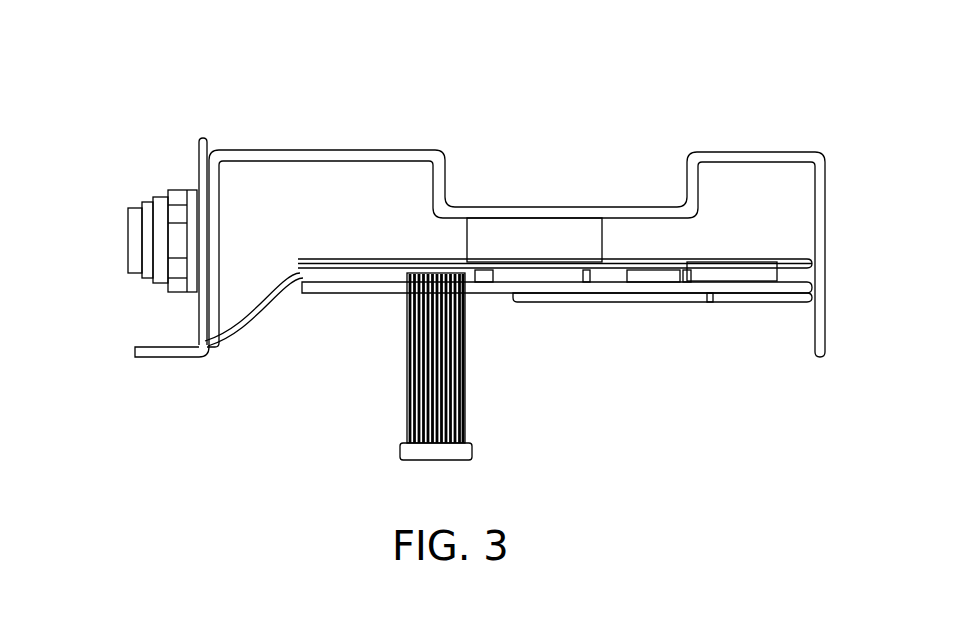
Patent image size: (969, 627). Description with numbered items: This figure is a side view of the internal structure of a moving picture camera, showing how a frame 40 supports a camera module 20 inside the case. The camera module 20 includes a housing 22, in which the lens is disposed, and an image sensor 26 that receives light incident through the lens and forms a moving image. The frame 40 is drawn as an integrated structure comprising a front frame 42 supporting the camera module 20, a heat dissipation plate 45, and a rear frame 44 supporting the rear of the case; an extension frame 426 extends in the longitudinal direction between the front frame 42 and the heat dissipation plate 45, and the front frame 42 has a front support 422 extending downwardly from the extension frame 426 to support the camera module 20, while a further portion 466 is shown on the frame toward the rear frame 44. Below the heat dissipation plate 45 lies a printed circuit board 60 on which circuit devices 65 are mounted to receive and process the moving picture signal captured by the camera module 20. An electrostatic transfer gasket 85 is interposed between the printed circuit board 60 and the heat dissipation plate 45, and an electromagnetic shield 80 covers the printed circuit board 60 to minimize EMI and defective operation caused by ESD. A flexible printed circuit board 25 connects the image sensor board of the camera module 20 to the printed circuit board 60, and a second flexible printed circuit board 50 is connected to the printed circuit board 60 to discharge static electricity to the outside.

The camera module 20 is at (125, 204).
The housing 22 is at (140, 253).
The flexible printed circuit board 25 is at (197, 324).
The image sensor 26 is at (199, 178).
The frame 40 is at (544, 200).
The front frame 42 is at (328, 211).
The front support 422 is at (215, 242).
The extension frame 426 is at (365, 150).
The rear frame 44 is at (826, 165).
The heat dissipation plate 45 is at (488, 207).
The raised top portion 466 is at (742, 152).
The flexible printed circuit board 50 is at (470, 397).
The printed circuit board 60 is at (690, 292).
The circuit devices 65 is at (643, 283).
The electromagnetic shield 80 is at (757, 260).
The electrostatic transfer gasket 85 is at (558, 230).